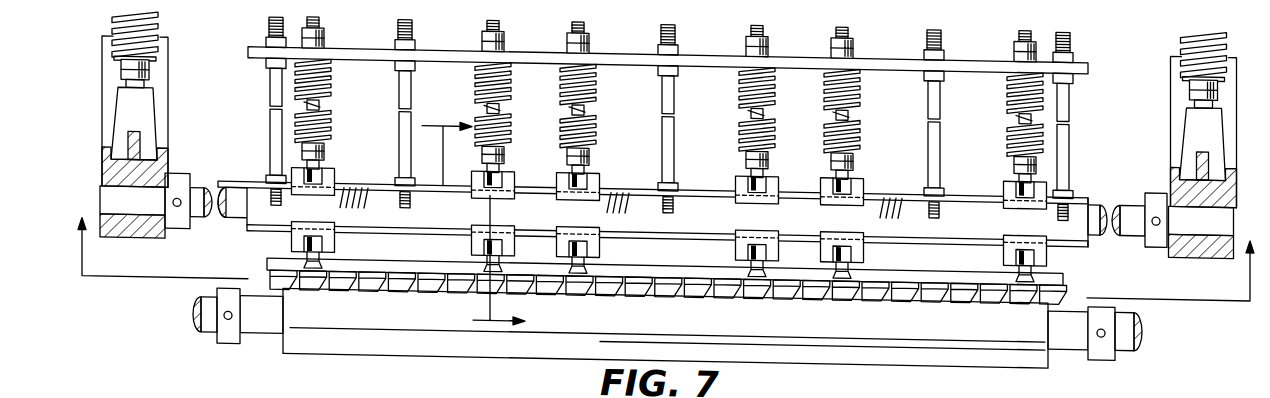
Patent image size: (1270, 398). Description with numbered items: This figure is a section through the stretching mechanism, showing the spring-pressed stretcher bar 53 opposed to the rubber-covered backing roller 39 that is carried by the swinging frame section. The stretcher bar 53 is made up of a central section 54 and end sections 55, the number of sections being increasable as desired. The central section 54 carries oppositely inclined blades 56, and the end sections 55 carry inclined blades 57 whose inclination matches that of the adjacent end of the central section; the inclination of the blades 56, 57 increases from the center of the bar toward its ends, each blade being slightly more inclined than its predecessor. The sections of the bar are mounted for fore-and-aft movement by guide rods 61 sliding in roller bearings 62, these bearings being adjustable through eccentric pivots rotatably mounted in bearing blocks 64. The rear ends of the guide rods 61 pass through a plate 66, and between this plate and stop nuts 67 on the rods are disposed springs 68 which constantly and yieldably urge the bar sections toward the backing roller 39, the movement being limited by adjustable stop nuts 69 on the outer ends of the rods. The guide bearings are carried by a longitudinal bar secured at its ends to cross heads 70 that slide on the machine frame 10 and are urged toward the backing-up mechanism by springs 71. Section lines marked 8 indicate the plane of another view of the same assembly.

The section line 8- 8 is at (667, 274).
The machine frame 10 is at (473, 225).
The backing roller 39 is at (913, 315).
The stretcher bar 53 is at (837, 291).
The central section 54 is at (656, 256).
The end sections 55 is at (400, 257).
The oppositely inclined blades 56 is at (613, 263).
The inclined blades 57 is at (407, 285).
The guide rods 61 is at (318, 104).
The roller bearings 62 is at (305, 167).
The bearing blocks 64 is at (317, 217).
The plate 66 is at (438, 42).
The stop nuts 67 is at (320, 147).
The springs 68 is at (330, 76).
The adjustable stop nuts 69 is at (325, 32).
The cross heads 70 is at (142, 112).
The springs 71 is at (160, 20).